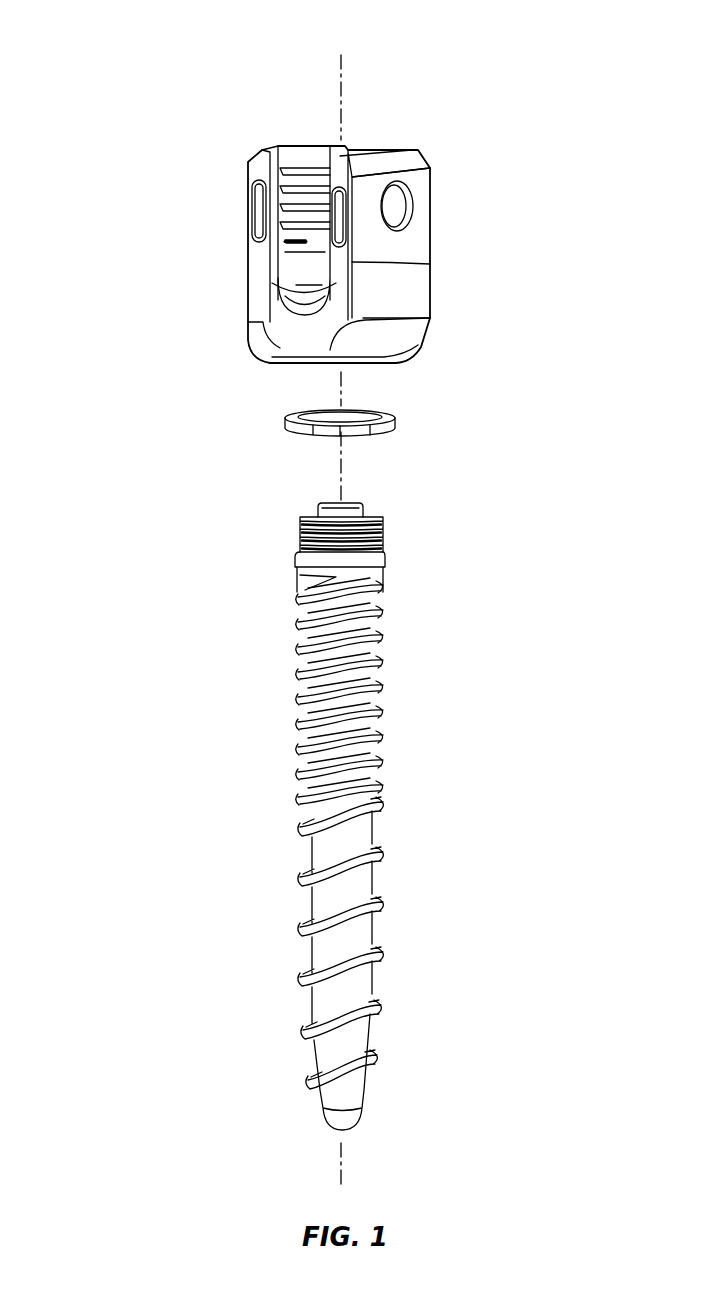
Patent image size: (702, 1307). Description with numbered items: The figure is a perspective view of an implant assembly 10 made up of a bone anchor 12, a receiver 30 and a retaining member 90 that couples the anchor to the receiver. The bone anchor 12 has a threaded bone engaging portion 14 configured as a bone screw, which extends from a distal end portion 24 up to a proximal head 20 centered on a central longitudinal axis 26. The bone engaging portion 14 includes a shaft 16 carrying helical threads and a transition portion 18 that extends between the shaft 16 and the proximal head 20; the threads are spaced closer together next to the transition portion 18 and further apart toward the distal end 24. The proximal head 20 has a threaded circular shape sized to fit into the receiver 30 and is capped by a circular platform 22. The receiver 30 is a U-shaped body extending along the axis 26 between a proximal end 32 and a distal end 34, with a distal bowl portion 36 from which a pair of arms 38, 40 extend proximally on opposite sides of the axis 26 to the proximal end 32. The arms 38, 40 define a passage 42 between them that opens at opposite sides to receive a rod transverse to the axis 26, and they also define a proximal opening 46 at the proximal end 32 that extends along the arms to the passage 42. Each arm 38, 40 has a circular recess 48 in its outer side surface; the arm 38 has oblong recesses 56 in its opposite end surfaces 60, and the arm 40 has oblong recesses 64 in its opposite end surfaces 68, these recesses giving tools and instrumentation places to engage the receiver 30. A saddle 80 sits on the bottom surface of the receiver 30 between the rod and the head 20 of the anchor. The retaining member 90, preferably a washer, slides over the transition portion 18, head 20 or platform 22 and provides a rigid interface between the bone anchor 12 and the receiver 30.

The implant assembly 10 is at (205, 116).
The bone anchor 12 is at (399, 829).
The threaded bone engaging portion 14 is at (303, 778).
The shaft 16 is at (357, 706).
The transition portion 18 is at (386, 570).
The proximal head 20 is at (300, 530).
The circular platform 22 is at (368, 505).
The distal end portion 24 is at (350, 1118).
The central longitudinal axis 26 is at (342, 93).
The receiver 30 is at (358, 254).
The proximal end 32 is at (396, 150).
The distal end 34 is at (378, 368).
The distal bowl portion 36 is at (402, 342).
The arm 38 is at (233, 232).
The arm 40 is at (423, 232).
The passage 42 is at (356, 246).
The proximal opening 46 is at (312, 145).
The circular recess 48 is at (396, 207).
The oblong recess 56 is at (252, 198).
The end surface 60 is at (262, 265).
The oblong recess 64 is at (408, 175).
The end surface 68 is at (342, 268).
The saddle 80 is at (302, 284).
The retaining member 90 is at (382, 426).